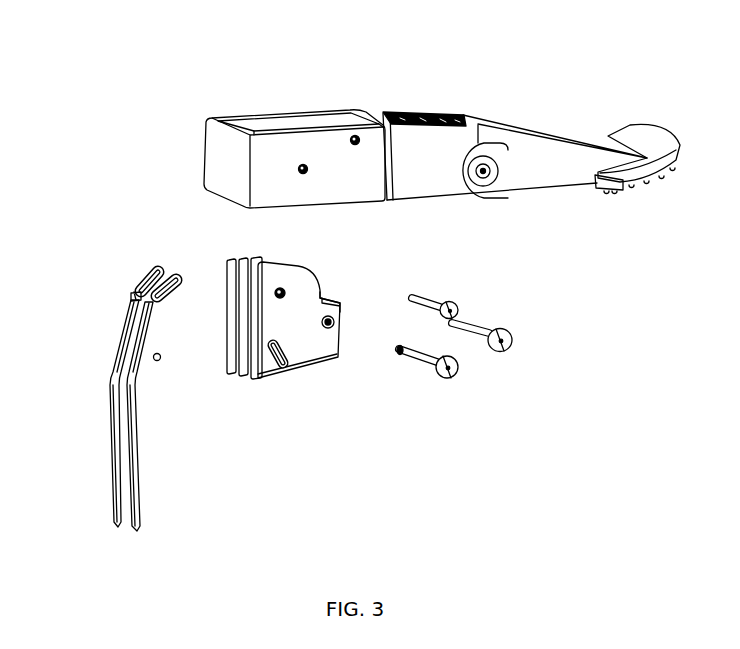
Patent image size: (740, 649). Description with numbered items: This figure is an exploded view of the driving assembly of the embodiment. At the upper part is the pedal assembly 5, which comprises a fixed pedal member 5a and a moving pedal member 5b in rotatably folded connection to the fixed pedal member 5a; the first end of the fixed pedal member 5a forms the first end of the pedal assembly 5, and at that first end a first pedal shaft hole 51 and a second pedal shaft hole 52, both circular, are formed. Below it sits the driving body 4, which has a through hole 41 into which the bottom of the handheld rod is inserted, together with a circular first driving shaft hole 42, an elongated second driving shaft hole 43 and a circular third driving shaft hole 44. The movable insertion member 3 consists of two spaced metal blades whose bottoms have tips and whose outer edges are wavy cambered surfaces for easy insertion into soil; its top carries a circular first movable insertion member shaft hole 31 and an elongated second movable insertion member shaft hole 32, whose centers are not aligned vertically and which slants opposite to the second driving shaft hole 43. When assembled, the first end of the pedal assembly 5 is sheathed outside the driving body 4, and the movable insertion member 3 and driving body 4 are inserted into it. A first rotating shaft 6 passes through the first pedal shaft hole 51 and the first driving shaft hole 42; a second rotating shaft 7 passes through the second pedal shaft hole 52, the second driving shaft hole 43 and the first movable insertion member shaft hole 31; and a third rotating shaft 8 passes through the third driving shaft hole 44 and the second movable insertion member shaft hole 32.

The movable insertion member 3 is at (135, 428).
The first movable insertion member shaft hole 31 is at (157, 360).
The second movable insertion member shaft hole 32 is at (180, 293).
The driving body 4 is at (250, 257).
The through hole 41 is at (329, 306).
The first driving shaft hole 42 is at (335, 323).
The second driving shaft hole 43 is at (286, 366).
The third driving shaft hole 44 is at (286, 293).
The pedal assembly 5 is at (530, 58).
The fixed pedal member 5a is at (448, 116).
The moving pedal member 5b is at (495, 122).
The first pedal shaft hole 51 is at (360, 140).
The second pedal shaft hole 52 is at (307, 169).
The first rotating shaft 6 is at (488, 332).
The second rotating shaft 7 is at (422, 361).
The third rotating shaft 8 is at (430, 295).